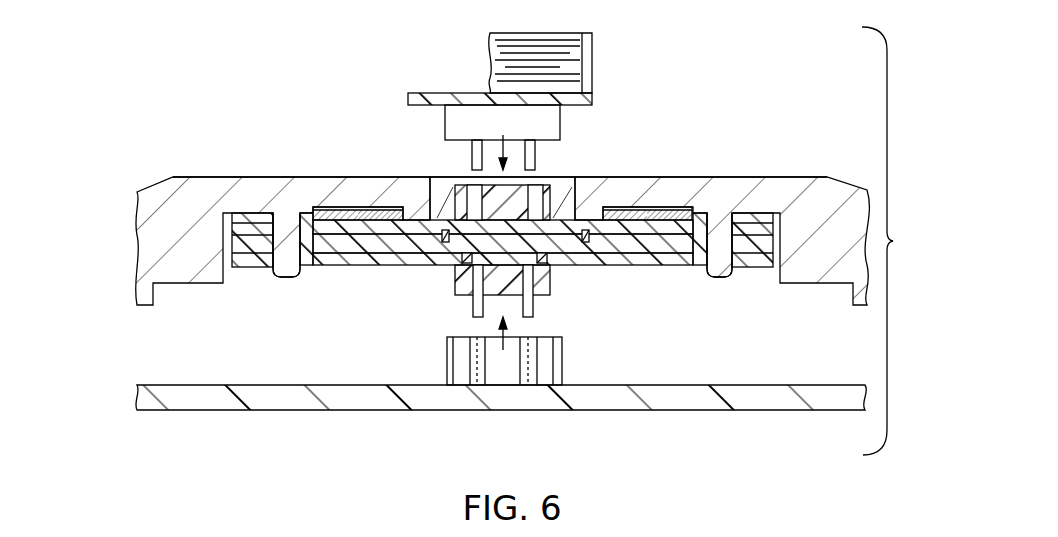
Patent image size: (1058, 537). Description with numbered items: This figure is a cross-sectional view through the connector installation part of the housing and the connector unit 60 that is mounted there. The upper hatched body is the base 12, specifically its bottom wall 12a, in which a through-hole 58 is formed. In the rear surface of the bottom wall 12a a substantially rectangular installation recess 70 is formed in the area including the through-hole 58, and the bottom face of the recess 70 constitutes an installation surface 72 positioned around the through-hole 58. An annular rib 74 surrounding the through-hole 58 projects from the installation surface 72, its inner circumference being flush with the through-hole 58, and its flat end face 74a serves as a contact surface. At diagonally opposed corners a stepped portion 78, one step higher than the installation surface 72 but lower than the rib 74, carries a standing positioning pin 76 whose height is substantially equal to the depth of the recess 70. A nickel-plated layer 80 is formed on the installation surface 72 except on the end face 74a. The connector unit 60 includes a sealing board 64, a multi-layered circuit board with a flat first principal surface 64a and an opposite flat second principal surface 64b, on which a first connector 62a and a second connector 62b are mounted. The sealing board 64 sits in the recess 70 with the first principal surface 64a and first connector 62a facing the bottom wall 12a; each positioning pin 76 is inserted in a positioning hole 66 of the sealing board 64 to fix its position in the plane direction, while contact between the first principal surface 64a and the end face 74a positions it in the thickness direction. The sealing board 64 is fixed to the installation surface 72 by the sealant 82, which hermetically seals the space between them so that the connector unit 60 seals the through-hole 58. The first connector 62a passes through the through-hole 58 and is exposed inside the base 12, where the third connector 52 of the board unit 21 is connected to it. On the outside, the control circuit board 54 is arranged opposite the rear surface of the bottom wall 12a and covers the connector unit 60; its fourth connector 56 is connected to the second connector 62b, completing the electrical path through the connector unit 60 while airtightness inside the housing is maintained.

The base 12 is at (820, 152).
The bottom wall 12a is at (210, 177).
The board unit 21 is at (423, 88).
The third connector 52 is at (560, 120).
The control circuit board 54 is at (657, 410).
The fourth connector 56 is at (463, 378).
The through-hole 58 is at (568, 192).
The connector unit 60 is at (377, 272).
The first connector 62a is at (460, 186).
The second connector 62b is at (548, 293).
The sealing board 64 is at (344, 253).
The first principal surface 64a is at (648, 234).
The second principal surface 64b is at (683, 265).
The positioning hole 66 is at (278, 242).
The installation recess 70 is at (752, 213).
The installation surface 72 is at (337, 209).
The rib 74 is at (418, 240).
The end face 74a is at (446, 243).
The positioning pin 76 is at (284, 279).
The stepped portion 78 is at (307, 214).
The nickel-plated layer 80 is at (357, 209).
The sealant 82 is at (393, 209).